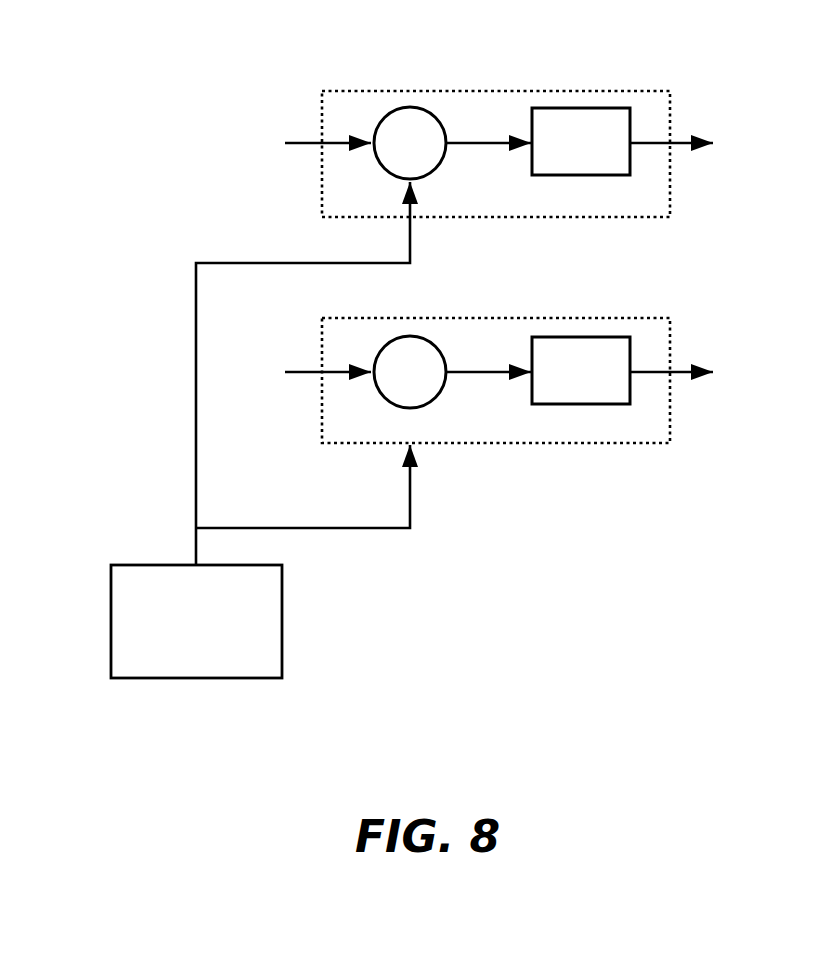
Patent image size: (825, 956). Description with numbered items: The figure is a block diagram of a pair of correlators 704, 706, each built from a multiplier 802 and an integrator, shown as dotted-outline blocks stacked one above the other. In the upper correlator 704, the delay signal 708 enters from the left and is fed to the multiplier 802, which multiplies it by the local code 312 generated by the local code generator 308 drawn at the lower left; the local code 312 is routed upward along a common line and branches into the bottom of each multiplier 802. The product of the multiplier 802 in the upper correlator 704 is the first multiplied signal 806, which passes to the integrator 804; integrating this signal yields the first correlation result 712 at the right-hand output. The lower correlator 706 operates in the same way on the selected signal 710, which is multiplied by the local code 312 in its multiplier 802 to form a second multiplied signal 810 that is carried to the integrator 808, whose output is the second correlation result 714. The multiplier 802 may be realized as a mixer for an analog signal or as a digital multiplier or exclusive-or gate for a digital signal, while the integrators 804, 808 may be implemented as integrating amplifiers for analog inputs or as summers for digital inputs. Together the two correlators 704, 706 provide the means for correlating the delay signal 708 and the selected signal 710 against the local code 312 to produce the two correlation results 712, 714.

The local code generator 308 is at (282, 620).
The local code 312 is at (196, 443).
The correlator 704 is at (670, 217).
The correlator 706 is at (670, 443).
The delay signal 708 is at (308, 143).
The selected signal 710 is at (308, 372).
The first correlation result 712 is at (658, 143).
The second correlation result 714 is at (658, 318).
The multiplier 802 is at (400, 107).
The integrator 804 is at (562, 108).
The first multiplied signal 806 is at (492, 143).
The integrator 808 is at (562, 337).
The second product signal 810 is at (492, 372).